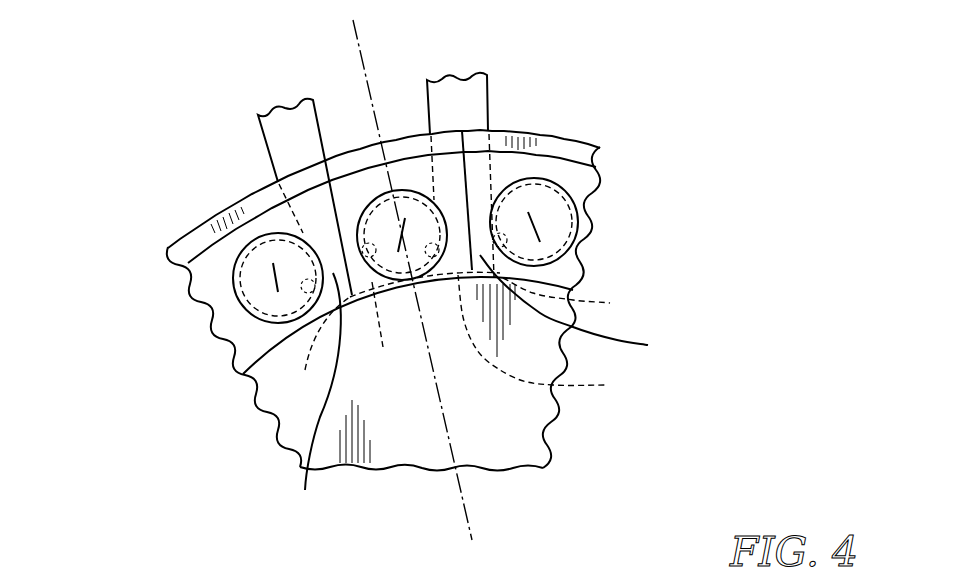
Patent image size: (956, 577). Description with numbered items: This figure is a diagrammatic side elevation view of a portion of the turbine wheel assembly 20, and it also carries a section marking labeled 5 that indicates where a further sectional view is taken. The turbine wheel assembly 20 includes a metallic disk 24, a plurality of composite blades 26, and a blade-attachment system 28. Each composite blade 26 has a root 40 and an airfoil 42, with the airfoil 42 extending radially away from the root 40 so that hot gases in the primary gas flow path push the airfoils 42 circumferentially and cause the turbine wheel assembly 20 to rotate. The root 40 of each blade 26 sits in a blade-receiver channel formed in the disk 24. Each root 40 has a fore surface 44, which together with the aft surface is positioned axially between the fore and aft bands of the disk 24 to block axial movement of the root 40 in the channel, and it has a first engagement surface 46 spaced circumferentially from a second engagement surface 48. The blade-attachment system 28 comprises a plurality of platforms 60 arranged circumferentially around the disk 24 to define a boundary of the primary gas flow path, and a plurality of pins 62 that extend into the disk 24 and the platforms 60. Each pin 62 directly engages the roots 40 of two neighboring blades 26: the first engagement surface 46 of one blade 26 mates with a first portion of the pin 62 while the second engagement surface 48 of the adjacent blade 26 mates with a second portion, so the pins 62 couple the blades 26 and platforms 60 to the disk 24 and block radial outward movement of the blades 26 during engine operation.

The turbine wheel assembly 20 is at (123, 89).
The metallic disk 24 is at (562, 413).
The composite blade 26 is at (490, 73).
The blade-attachment system 28 is at (150, 128).
The root 40 is at (650, 387).
The airfoil 42 is at (266, 144).
The fore surface 44 is at (486, 387).
The first engagement surface 46 is at (507, 329).
The second engagement surface 48 is at (469, 339).
The platform 60 is at (218, 213).
The pin 62 is at (367, 290).
The section line 5 is at (321, 42).